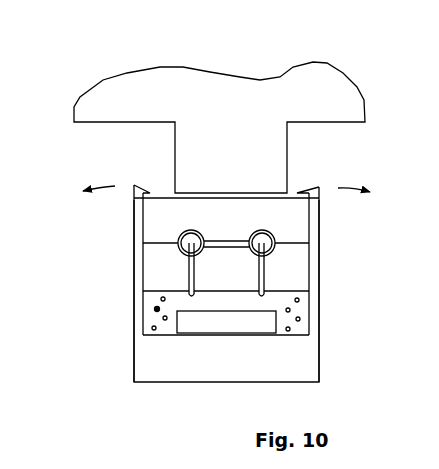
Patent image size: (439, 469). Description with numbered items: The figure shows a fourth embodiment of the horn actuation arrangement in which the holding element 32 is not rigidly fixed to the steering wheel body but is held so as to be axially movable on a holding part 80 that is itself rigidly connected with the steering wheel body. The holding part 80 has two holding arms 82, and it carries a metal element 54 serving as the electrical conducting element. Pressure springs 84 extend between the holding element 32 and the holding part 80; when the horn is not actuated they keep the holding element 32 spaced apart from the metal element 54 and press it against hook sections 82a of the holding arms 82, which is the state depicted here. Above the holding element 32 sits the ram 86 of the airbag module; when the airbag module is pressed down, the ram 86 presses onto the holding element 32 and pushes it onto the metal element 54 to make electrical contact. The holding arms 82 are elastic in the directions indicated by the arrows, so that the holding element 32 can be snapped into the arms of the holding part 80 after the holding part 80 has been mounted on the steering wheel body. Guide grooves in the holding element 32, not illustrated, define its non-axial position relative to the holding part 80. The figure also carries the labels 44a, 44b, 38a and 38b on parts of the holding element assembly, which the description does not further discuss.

The ram 86 is at (277, 153).
The holding part 80 is at (303, 365).
The holding arms 82 is at (135, 287).
The hook sections 82a is at (148, 198).
The holding element 32 is at (292, 230).
The first pin head 44a is at (188, 232).
The second pin head 44b is at (267, 231).
The first pin stem 38a is at (192, 277).
The second pin stem 38b is at (258, 268).
The metal element 54 is at (210, 320).
The pressure springs 84 is at (157, 309).